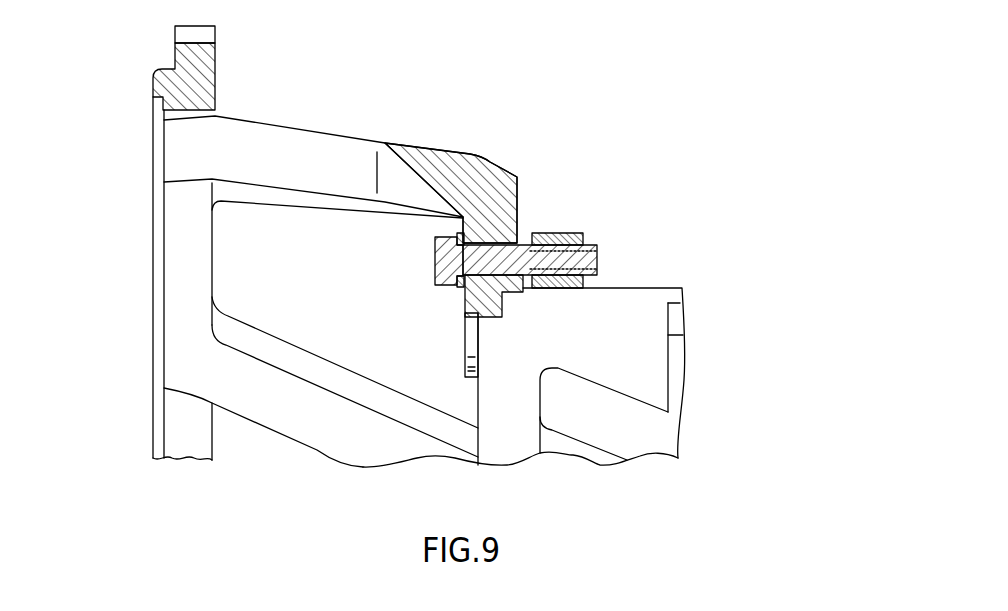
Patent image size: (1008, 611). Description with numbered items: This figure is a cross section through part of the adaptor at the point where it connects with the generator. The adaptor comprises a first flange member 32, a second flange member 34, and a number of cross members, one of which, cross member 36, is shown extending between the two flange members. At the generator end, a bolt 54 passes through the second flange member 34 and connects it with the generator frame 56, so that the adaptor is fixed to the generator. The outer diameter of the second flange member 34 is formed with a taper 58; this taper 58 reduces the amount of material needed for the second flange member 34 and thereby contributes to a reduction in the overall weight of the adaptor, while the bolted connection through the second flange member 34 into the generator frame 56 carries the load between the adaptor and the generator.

The first flange member 32 is at (153, 90).
The cross member 36 is at (327, 143).
The taper 58 is at (505, 168).
The second flange member 34 is at (517, 210).
The bolt 54 is at (438, 257).
The generator frame 56 is at (632, 310).